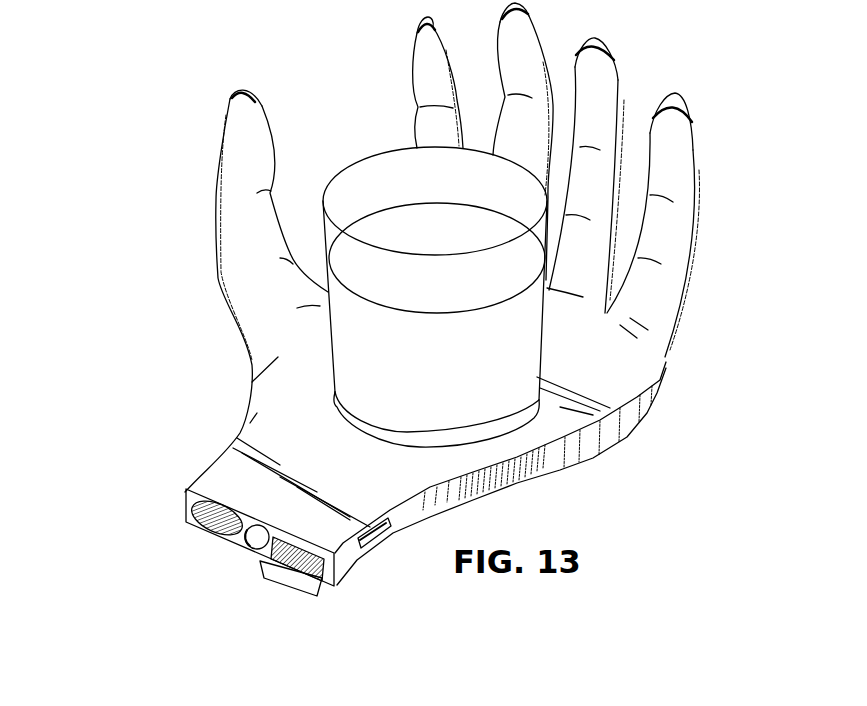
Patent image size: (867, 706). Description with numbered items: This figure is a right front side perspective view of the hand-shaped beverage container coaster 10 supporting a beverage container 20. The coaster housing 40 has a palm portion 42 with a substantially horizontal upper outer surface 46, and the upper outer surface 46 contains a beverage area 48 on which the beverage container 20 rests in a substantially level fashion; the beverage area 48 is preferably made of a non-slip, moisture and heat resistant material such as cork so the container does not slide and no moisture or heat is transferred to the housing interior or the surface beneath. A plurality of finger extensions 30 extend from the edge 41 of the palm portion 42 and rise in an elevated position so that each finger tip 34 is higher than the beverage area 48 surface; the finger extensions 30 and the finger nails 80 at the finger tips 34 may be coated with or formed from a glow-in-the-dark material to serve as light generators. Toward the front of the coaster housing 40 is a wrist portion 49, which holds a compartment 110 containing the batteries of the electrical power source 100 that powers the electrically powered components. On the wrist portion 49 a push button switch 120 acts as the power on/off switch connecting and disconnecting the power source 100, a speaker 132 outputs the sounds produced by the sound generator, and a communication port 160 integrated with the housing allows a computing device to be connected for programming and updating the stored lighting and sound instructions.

The beverage container coaster 10 is at (137, 181).
The beverage container 20 is at (345, 165).
The finger extension 30 is at (210, 251).
The finger tip 34 is at (262, 108).
The finger nail 80 is at (233, 92).
The coaster housing 40 is at (427, 476).
The edge 41 is at (550, 462).
The palm portion 42 is at (250, 385).
The upper outer surface 46 is at (472, 351).
The beverage area 48 is at (436, 429).
The wrist portion 49 is at (218, 472).
The electrical power source 100 is at (336, 614).
The compartment 110 is at (272, 578).
The push button switch 120 is at (252, 546).
The speaker 132 is at (200, 527).
The communication port 160 is at (380, 540).